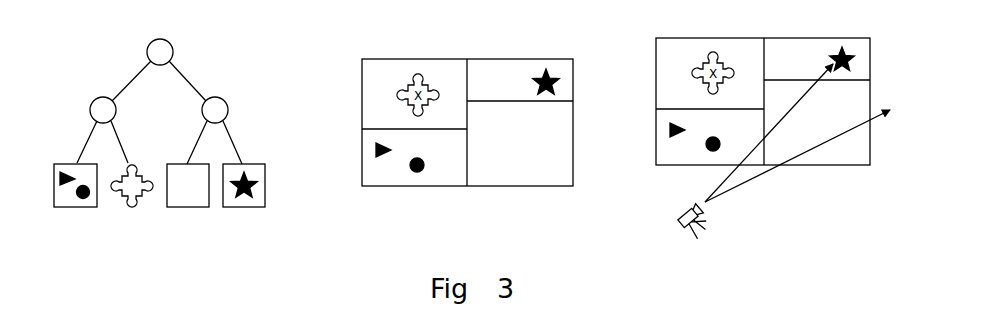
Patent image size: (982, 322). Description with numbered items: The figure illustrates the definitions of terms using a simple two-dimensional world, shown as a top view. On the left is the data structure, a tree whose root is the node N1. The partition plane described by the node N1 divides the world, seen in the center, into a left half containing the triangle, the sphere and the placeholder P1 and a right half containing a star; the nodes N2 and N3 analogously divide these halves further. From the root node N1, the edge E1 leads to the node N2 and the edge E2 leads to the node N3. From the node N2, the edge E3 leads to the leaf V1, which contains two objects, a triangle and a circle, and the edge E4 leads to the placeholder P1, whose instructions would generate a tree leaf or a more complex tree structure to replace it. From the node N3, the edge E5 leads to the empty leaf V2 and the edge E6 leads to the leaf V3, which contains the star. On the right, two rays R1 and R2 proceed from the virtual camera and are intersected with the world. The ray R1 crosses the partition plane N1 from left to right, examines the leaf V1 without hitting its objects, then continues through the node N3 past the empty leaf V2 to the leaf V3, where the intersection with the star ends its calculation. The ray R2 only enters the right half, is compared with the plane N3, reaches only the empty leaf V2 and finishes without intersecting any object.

The root node N1 is at (517, 217).
The node N2 is at (387, 127).
The node N3 is at (538, 44).
The edge E1 is at (131, 81).
The edge E2 is at (191, 81).
The edge E3 is at (80, 142).
The edge E4 is at (131, 142).
The edge E5 is at (191, 142).
The edge E6 is at (242, 142).
The leaf V1 is at (75, 198).
The placeholder P1 is at (132, 198).
The leaf V2 is at (188, 198).
The leaf V3 is at (244, 198).
The ray R1 is at (766, 133).
The ray R2 is at (797, 156).